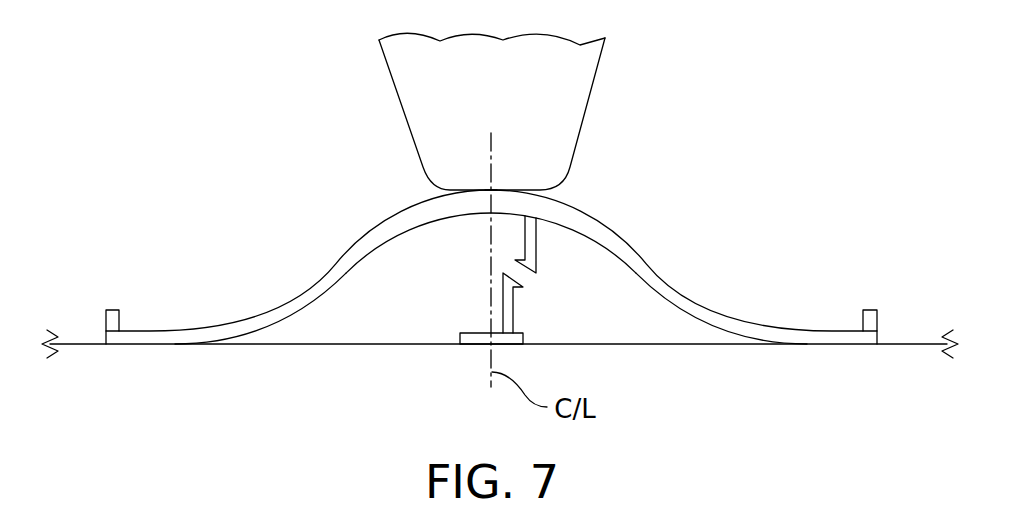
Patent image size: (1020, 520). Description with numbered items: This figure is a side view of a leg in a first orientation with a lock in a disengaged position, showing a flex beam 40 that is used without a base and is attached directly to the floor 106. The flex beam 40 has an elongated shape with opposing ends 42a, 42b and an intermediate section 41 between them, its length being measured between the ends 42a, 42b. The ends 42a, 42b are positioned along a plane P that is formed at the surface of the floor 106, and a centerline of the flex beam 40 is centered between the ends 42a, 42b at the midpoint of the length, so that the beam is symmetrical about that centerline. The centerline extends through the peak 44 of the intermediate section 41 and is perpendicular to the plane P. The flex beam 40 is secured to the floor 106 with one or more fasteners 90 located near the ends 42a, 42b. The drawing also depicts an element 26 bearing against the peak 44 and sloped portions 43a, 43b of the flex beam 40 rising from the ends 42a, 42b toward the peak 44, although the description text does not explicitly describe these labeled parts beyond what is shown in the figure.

The hopper / nozzle 26 is at (410, 88).
The flex beam 40 is at (487, 225).
The intermediate section 41 is at (563, 202).
The end 42a is at (105, 337).
The end 42b is at (880, 338).
The first sloped side 43a is at (265, 312).
The second sloped side 43b is at (712, 308).
The peak 44 is at (491, 190).
The fasteners 90 is at (112, 308).
The floor 106 is at (900, 413).
The plane P is at (937, 338).